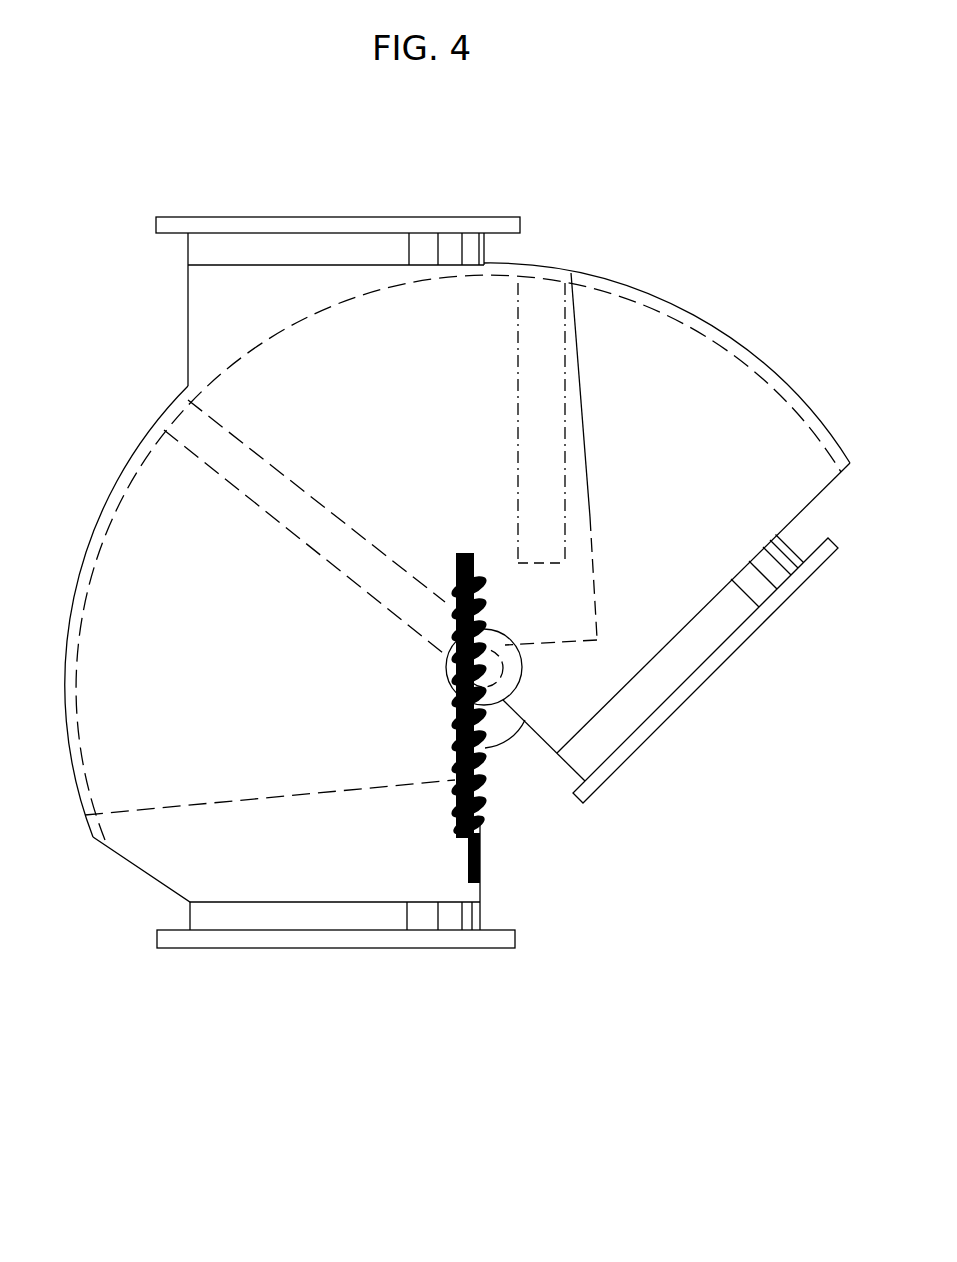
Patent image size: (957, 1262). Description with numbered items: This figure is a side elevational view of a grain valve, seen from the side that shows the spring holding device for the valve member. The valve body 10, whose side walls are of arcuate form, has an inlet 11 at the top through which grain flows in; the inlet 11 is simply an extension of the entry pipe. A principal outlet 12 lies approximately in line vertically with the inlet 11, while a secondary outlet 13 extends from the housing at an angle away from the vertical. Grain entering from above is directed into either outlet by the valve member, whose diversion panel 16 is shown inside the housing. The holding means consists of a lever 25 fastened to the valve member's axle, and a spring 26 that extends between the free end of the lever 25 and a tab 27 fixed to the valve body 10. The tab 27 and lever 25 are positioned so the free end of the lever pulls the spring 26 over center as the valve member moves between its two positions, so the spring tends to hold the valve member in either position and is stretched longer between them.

The valve body 10 is at (731, 338).
The inlet 11 is at (283, 216).
The principal outlet 12 is at (307, 948).
The secondary outlet 13 is at (685, 658).
The diversion panel 16 is at (315, 540).
The lever 25 is at (480, 632).
The spring 26 is at (455, 768).
The tab 27 is at (481, 858).